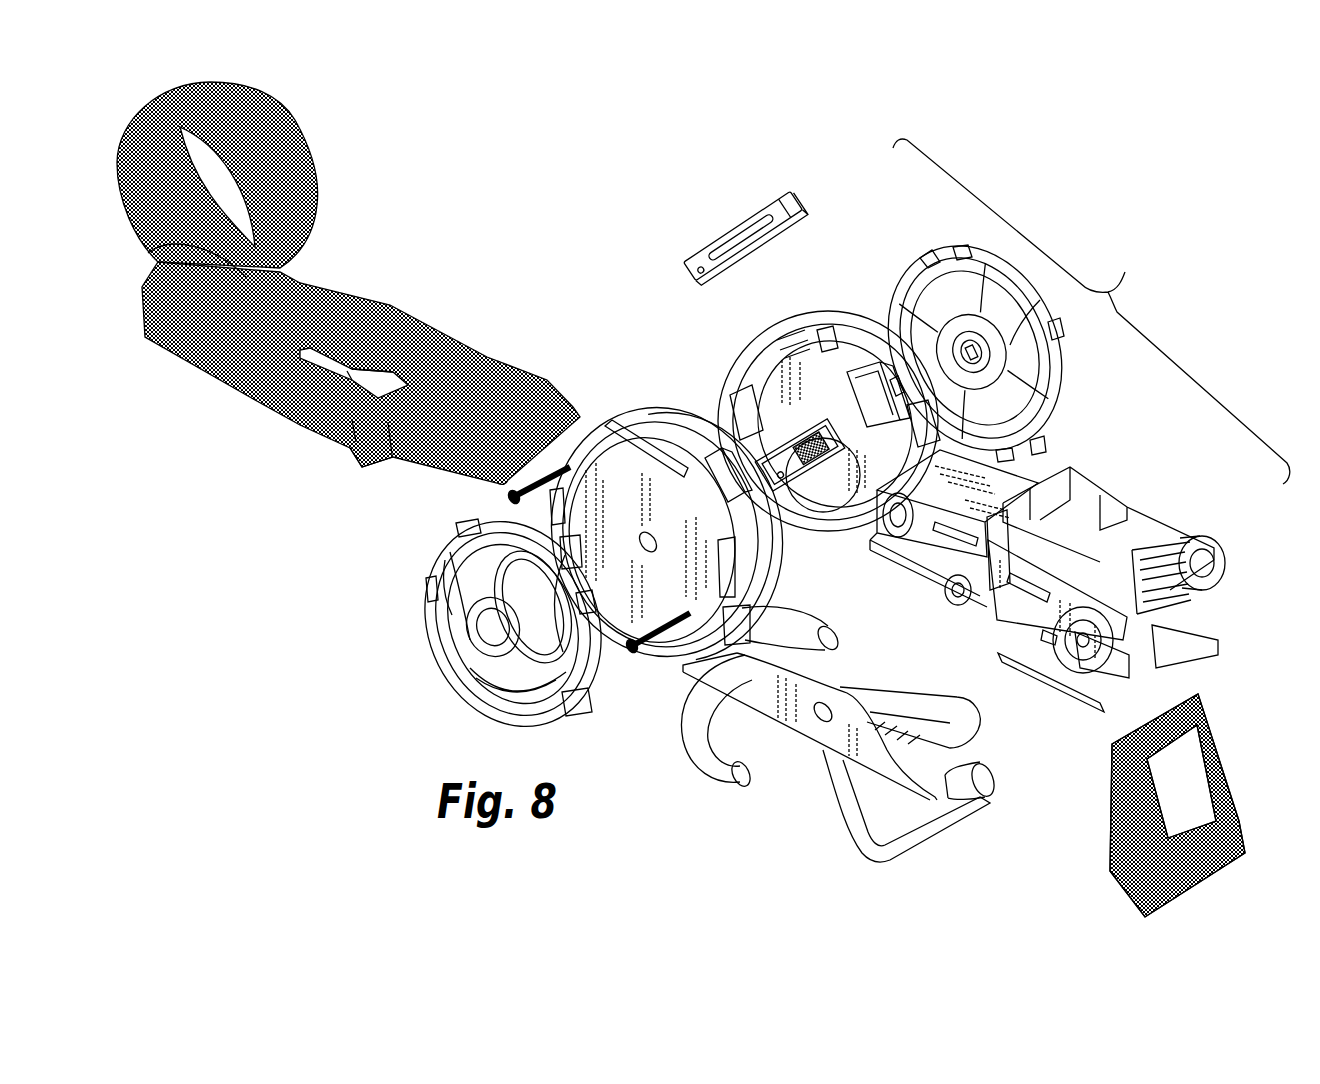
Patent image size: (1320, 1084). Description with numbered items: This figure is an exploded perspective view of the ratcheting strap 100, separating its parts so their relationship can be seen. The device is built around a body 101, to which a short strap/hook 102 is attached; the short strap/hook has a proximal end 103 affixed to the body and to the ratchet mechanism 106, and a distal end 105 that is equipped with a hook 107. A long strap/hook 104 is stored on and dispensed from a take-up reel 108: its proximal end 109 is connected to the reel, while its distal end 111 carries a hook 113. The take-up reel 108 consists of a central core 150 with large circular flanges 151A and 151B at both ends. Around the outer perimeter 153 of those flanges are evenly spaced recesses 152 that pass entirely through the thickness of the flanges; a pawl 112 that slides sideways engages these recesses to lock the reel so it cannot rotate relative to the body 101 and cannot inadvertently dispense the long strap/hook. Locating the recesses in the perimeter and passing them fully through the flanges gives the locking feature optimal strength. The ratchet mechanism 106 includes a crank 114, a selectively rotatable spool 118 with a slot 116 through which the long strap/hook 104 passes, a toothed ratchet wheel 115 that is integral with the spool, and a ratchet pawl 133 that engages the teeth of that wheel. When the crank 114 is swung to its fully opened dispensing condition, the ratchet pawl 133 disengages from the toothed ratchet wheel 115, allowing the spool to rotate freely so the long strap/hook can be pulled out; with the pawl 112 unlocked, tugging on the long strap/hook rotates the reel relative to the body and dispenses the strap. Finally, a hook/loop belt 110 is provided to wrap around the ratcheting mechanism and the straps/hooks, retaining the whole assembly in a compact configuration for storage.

The ratcheting strap 100 is at (1091, 311).
The body 101 is at (735, 347).
The short strap/hook 102 is at (256, 406).
The proximal end 103 is at (347, 371).
The long strap/hook 104 is at (390, 305).
The distal end 105 is at (383, 462).
The ratchet mechanism 106 is at (1129, 513).
The hook 107 is at (683, 716).
The take-up reel 108 is at (740, 222).
The proximal end 109 is at (176, 260).
The hook/loop belt 110 is at (1106, 860).
The distal end 111 is at (376, 410).
The pawl 112 is at (800, 495).
The hook 113 is at (982, 727).
The crank 114 is at (1050, 485).
The toothed ratchet wheel 115 is at (1179, 544).
The slot 116 is at (1206, 655).
The spool 118 is at (1164, 586).
The ratchet pawl 133 is at (1010, 580).
The central core 150 is at (770, 197).
The flange 151A is at (477, 697).
The flange 151B is at (932, 247).
The recesses 152 is at (965, 248).
The outer perimeter 153 is at (1063, 368).